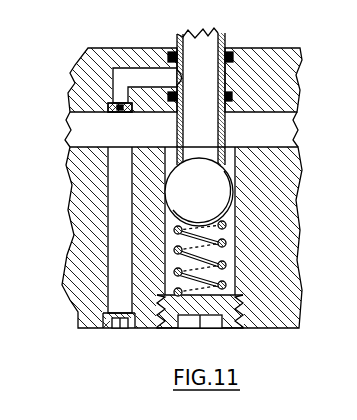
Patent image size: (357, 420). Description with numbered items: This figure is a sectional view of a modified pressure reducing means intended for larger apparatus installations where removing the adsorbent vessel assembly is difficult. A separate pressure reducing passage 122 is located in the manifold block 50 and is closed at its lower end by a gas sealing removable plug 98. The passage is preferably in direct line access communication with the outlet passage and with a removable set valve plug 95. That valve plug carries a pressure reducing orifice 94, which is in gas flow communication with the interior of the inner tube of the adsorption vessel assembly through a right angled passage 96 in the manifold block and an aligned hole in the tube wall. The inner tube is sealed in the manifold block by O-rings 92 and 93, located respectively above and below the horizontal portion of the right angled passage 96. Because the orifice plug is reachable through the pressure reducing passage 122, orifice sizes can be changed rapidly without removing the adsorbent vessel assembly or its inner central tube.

The valve body block 50 is at (283, 141).
The O-ring 92 is at (227, 50).
The O-ring 93 is at (230, 101).
The pressure reducing orifice 94 is at (122, 112).
The removable set valve plug 95 is at (108, 112).
The right angled passage 96 is at (149, 68).
The gas sealing removable plug 98 is at (128, 328).
The pressure reducing passage 122 is at (108, 185).